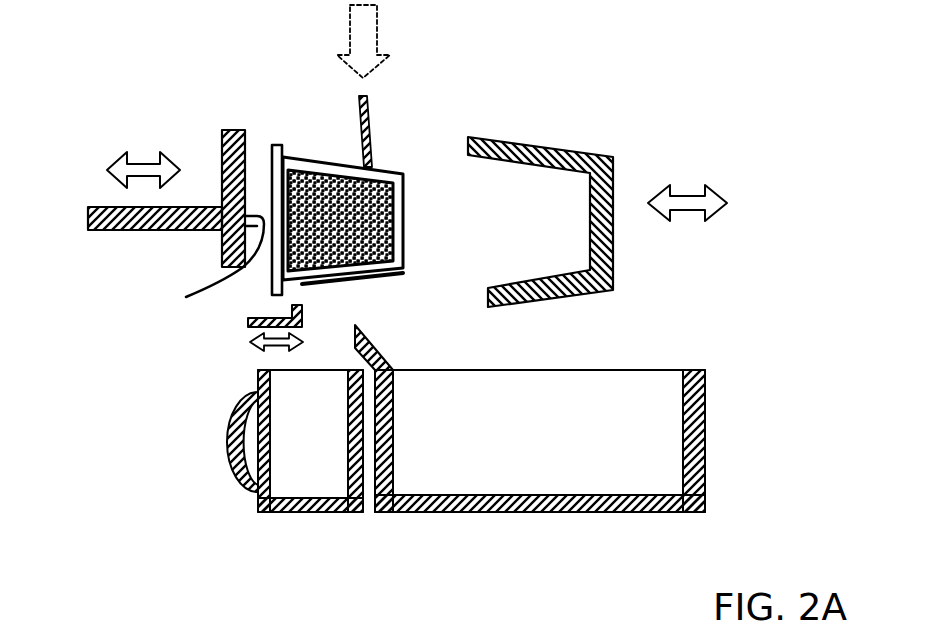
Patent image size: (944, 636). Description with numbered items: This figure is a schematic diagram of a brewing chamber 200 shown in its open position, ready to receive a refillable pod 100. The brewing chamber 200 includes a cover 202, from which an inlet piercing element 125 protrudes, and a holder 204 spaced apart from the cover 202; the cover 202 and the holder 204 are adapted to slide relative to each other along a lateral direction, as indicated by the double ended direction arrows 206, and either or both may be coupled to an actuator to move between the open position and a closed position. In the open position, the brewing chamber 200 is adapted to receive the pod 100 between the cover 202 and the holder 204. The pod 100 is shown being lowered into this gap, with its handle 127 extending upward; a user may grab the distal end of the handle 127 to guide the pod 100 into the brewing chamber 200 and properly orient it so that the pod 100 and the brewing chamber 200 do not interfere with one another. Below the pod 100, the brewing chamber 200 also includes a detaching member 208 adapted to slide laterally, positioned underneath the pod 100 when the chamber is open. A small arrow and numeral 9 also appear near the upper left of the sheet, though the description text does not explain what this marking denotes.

The direction indicator 9 is at (69, 0).
The refillable pod 100 is at (405, 150).
The inlet piercing element 125 is at (188, 267).
The handle 127 is at (360, 133).
The brewing chamber 200 is at (610, 178).
The cover 202 is at (225, 100).
The holder 204 is at (617, 160).
The double ended direction arrows 206 is at (728, 193).
The detaching member 208 is at (257, 313).